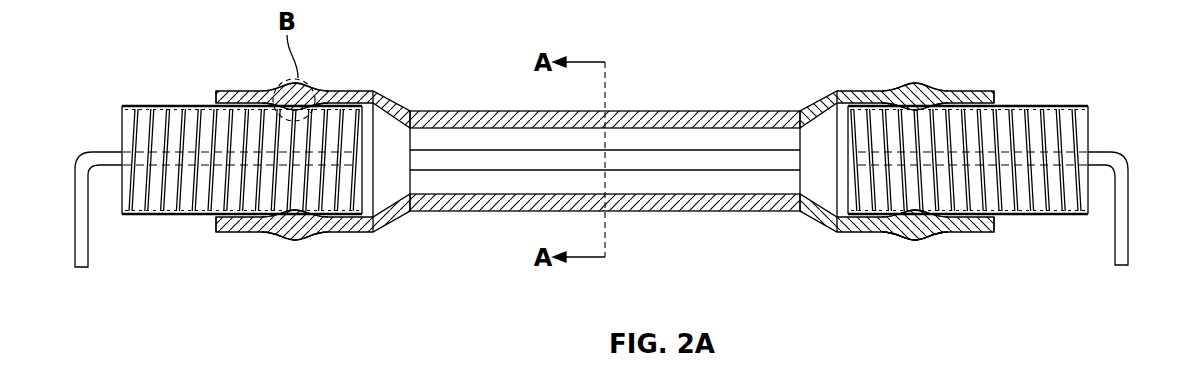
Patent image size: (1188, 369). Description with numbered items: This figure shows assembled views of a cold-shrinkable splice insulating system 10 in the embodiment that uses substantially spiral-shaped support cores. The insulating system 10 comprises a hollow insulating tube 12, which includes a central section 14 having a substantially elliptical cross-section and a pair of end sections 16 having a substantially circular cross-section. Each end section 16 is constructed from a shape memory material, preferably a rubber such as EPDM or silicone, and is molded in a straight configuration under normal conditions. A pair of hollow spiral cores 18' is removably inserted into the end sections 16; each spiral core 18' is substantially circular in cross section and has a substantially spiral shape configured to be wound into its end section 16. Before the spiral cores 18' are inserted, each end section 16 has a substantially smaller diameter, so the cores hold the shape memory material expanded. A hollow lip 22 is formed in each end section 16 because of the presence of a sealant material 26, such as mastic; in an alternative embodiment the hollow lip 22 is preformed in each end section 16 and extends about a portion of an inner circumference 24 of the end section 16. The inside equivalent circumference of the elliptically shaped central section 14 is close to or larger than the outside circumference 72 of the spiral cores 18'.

The insulating system 10 is at (739, 256).
The insulating tube 12 is at (677, 111).
The central section 14 is at (468, 111).
The end section 16 is at (232, 96).
The spiral core 18' is at (601, 163).
The hollow lip 22 is at (278, 96).
The inner circumference 24 is at (305, 96).
The sealant material 26 is at (913, 234).
The outside circumference 72 is at (338, 91).